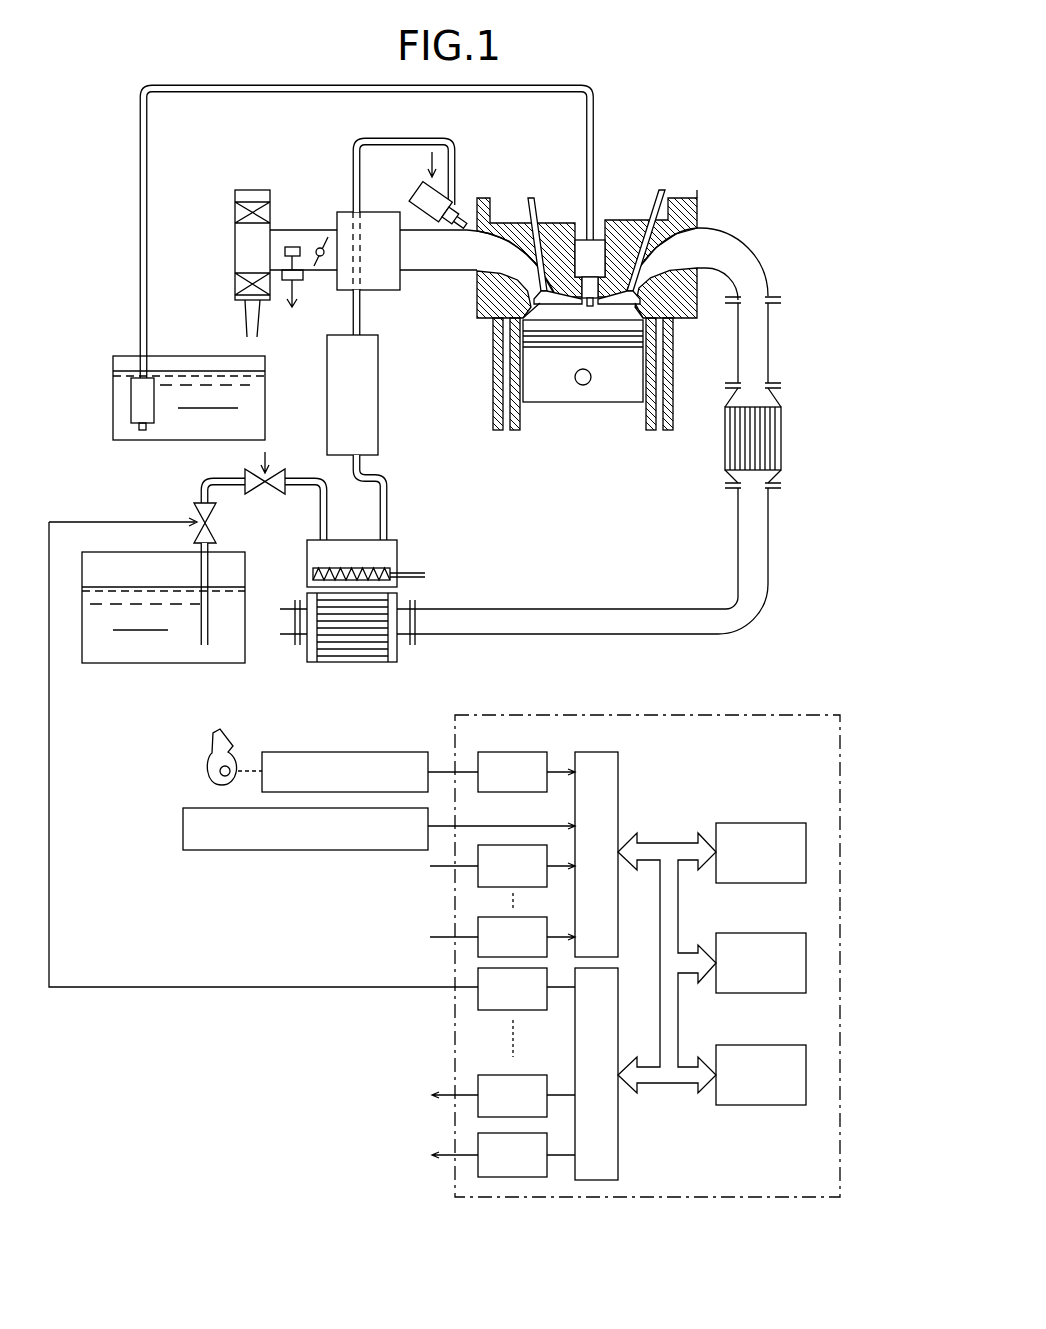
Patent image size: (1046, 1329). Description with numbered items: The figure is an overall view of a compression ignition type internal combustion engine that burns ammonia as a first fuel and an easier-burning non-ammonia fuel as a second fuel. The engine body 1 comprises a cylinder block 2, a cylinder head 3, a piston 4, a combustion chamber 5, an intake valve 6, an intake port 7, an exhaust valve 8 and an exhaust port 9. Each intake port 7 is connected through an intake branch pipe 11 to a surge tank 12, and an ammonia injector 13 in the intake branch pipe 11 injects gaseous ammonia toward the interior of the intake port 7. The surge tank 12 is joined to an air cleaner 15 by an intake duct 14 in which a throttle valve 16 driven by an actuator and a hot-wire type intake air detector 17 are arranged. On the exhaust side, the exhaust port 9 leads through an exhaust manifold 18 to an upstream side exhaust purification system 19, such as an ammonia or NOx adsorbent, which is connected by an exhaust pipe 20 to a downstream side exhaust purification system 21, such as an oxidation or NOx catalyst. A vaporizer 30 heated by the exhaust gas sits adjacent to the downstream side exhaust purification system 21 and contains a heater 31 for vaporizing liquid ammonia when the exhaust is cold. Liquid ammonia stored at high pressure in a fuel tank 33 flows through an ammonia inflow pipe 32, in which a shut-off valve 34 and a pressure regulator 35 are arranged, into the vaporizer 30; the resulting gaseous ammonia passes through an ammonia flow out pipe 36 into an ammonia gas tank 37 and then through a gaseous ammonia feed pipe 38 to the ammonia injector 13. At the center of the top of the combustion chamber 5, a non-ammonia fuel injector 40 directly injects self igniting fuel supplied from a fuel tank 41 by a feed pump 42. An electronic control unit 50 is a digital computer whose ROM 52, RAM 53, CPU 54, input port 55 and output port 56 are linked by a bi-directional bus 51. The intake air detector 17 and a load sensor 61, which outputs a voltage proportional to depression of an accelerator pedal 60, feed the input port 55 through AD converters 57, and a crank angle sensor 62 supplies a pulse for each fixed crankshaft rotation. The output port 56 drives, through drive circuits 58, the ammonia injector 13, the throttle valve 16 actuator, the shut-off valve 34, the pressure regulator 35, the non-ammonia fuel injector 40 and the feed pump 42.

The internal combustion engine body 1 is at (710, 184).
The cylinder block 2 is at (676, 379).
The cylinder head 3 is at (698, 217).
The piston 4 is at (555, 392).
The combustion chamber 5 is at (613, 317).
The intake valve 6 is at (540, 257).
The intake port 7 is at (502, 242).
The exhaust valve 8 is at (656, 190).
The exhaust port 9 is at (673, 245).
The intake branch pipe 11 is at (443, 272).
The surge tank 12 is at (387, 293).
The ammonia injector 13 is at (418, 188).
The intake duct 14 is at (318, 272).
The air cleaner 15 is at (230, 298).
The throttle valve 16 is at (322, 227).
The intake air detector 17 is at (295, 237).
The exhaust manifold 18 is at (744, 253).
The upstream side exhaust purification system 19 is at (782, 438).
The exhaust pipe 20 is at (770, 565).
The downstream side exhaust purification system 21 is at (375, 652).
The vaporizer 30 is at (307, 553).
The heater 31 is at (383, 568).
The ammonia inflow pipe 32 is at (303, 478).
The fuel tank 33 is at (107, 660).
The shut-off valve 34 is at (212, 528).
The pressure regulator 35 is at (275, 490).
The ammonia flow out pipe 36 is at (388, 518).
The ammonia gas tank 37 is at (378, 418).
The gaseous ammonia feed pipe 38 is at (352, 140).
The non-ammonia fuel injector 40 is at (595, 248).
The fuel tank 41 is at (167, 435).
The feed pump 42 is at (130, 405).
The electronic control unit 50 is at (800, 712).
The bi-directional bus 51 is at (661, 840).
The ROM 52 is at (775, 823).
The RAM 53 is at (775, 933).
The CPU 54 is at (775, 1045).
The input port 55 is at (610, 752).
The output port 56 is at (618, 1157).
The AD converter 57 is at (515, 752).
The drive circuit 58 is at (478, 1082).
The accelerator pedal 60 is at (206, 752).
The load sensor 61 is at (302, 752).
The crank angle sensor 62 is at (207, 850).